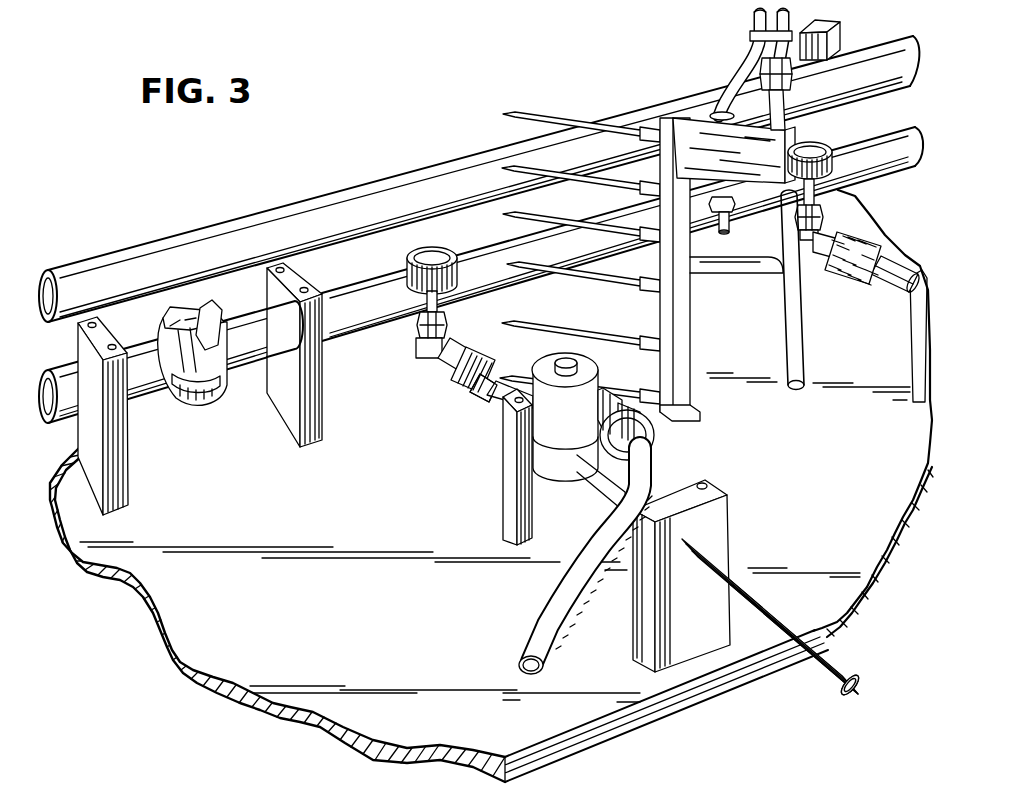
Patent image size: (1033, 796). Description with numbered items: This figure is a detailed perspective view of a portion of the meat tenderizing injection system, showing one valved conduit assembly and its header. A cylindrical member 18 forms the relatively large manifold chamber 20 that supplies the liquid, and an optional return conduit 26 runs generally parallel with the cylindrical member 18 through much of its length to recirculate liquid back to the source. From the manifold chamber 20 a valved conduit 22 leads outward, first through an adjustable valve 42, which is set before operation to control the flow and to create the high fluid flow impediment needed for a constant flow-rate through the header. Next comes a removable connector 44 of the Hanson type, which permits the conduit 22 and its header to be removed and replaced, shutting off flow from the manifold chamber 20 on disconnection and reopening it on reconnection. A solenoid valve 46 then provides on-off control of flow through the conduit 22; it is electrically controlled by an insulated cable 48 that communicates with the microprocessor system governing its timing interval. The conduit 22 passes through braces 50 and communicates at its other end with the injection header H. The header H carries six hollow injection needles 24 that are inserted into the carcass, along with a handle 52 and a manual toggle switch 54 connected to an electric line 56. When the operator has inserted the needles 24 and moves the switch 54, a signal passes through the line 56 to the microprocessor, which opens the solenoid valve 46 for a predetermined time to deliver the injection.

The cylindrical member 18 is at (344, 298).
The manifold chamber 20 is at (44, 372).
The valved conduit 22 is at (805, 16).
The hollow injection needles 24 is at (515, 265).
The return conduit 26 is at (200, 240).
The adjustable valve 42 is at (812, 148).
The removable connector 44 is at (470, 388).
The solenoid valve 46 is at (545, 470).
The insulated cable 48 is at (552, 632).
The braces 50 is at (575, 512).
The handle 52 is at (790, 322).
The manual toggle switch 54 is at (726, 222).
The electric line 56 is at (742, 66).
The injection header H is at (697, 395).